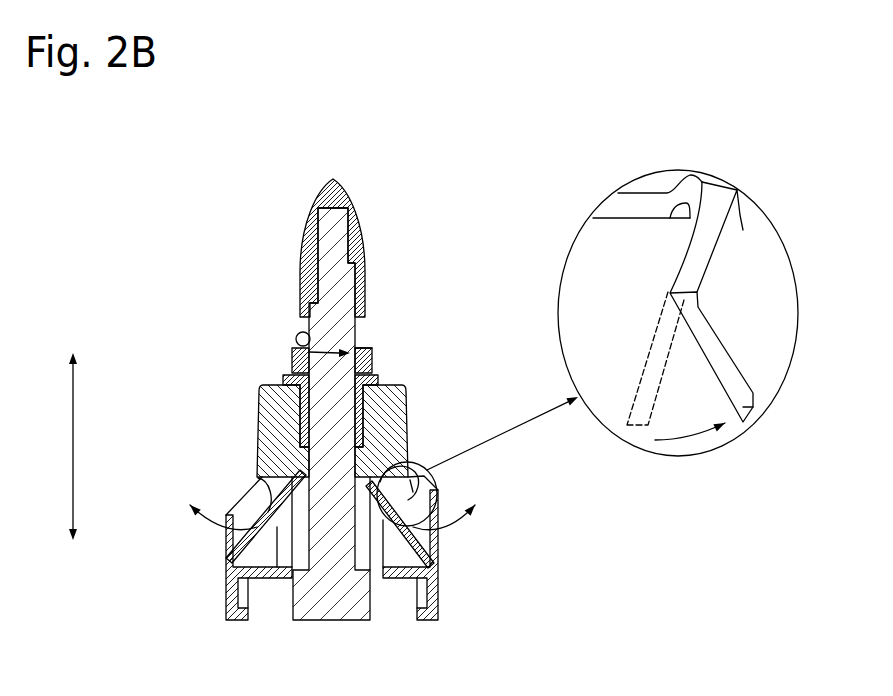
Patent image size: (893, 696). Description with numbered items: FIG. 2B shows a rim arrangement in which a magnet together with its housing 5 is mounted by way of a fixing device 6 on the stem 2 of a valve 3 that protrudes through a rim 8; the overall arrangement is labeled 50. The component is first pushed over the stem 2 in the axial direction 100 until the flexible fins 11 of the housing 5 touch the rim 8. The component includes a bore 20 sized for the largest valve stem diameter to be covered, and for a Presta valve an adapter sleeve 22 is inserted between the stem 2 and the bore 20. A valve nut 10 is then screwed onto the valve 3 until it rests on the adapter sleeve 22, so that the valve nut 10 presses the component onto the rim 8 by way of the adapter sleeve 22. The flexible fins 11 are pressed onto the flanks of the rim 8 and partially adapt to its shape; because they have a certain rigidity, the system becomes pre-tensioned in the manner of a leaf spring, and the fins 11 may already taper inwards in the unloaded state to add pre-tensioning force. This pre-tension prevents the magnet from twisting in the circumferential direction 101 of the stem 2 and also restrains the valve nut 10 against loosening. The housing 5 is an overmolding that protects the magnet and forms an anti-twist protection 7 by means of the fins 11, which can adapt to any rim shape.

The stem 2 is at (333, 218).
The valve 3 is at (498, 203).
The housing 5 is at (393, 418).
The fixing device 6 is at (203, 248).
The anti-twist protection 7 is at (493, 448).
The rim 8 is at (437, 593).
The valve nut 10 is at (373, 352).
The flexible fins 11 is at (722, 360).
The bore 20 is at (282, 360).
The adapter sleeve 22 is at (378, 377).
The assembly 50 is at (573, 153).
The axial direction 100 is at (73, 445).
The circumferential direction 101 is at (300, 325).